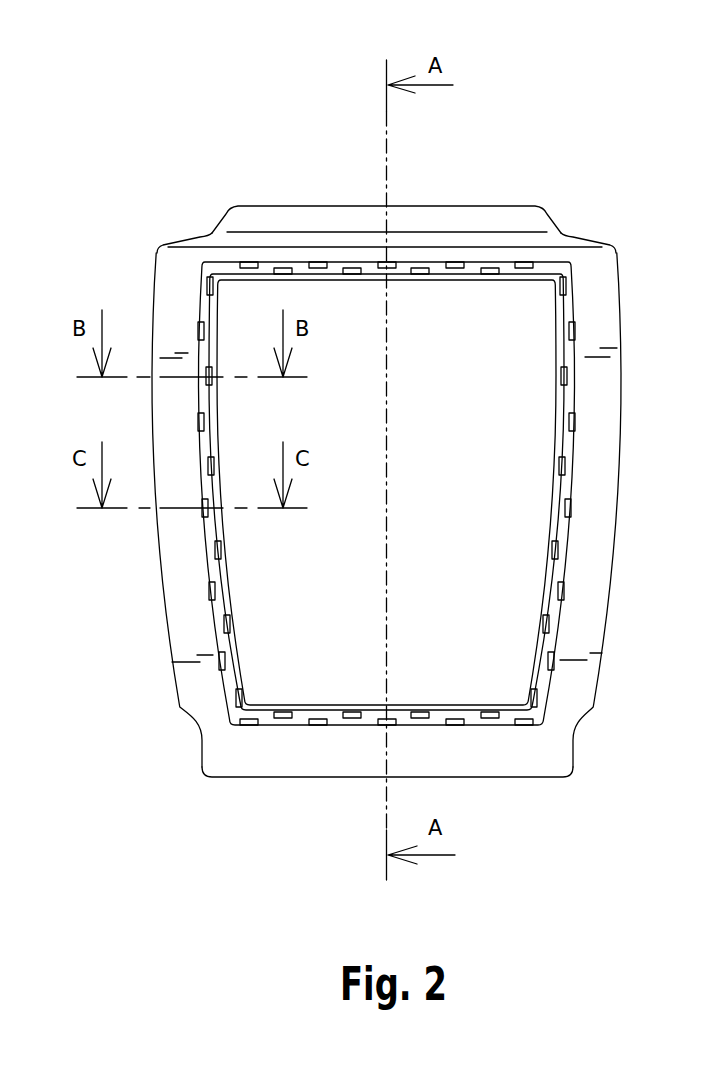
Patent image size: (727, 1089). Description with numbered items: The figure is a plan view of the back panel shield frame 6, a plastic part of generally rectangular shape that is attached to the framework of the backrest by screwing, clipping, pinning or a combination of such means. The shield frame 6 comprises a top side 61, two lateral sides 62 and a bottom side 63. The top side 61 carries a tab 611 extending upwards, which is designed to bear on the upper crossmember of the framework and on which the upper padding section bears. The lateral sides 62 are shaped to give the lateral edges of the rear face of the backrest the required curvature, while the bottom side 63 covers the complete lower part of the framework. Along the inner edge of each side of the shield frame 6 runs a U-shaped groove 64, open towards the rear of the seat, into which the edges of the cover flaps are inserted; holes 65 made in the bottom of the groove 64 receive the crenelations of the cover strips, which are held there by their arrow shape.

The shield frame 6 is at (602, 312).
The top side 61 is at (420, 253).
The tab 611 is at (323, 217).
The lateral sides 62 is at (175, 553).
The bottom side 63 is at (478, 753).
The U-shaped groove 64 is at (212, 570).
The holes 65 is at (565, 380).